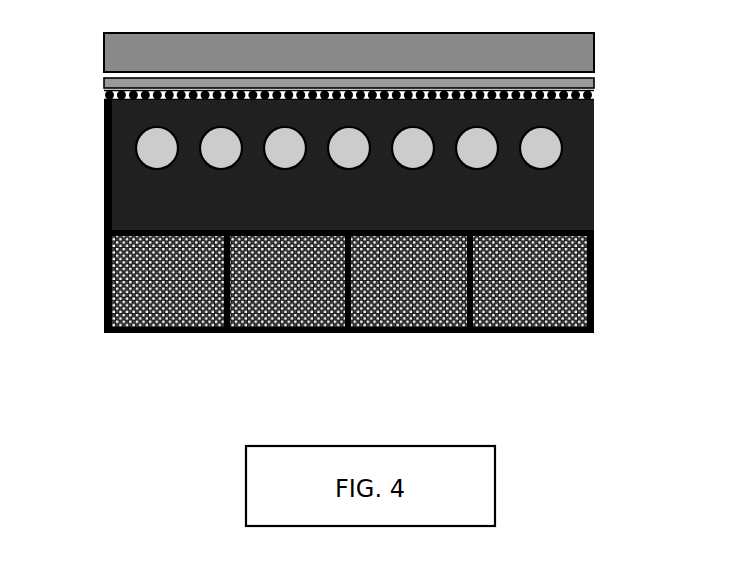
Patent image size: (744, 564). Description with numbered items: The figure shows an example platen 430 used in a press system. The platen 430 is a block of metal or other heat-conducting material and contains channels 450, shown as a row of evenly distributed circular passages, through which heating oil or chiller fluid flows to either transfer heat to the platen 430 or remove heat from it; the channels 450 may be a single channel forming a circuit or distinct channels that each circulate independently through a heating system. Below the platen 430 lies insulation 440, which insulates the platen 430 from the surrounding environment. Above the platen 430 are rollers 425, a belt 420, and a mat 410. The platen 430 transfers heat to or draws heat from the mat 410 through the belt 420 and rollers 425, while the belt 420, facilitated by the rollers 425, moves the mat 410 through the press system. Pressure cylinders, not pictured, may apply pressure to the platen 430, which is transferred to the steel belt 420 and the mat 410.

The mat 410 is at (600, 50).
The belt 420 is at (101, 82).
The rollers 425 is at (600, 95).
The platen 430 is at (102, 158).
The insulation 440 is at (598, 289).
The channels 450 is at (549, 150).